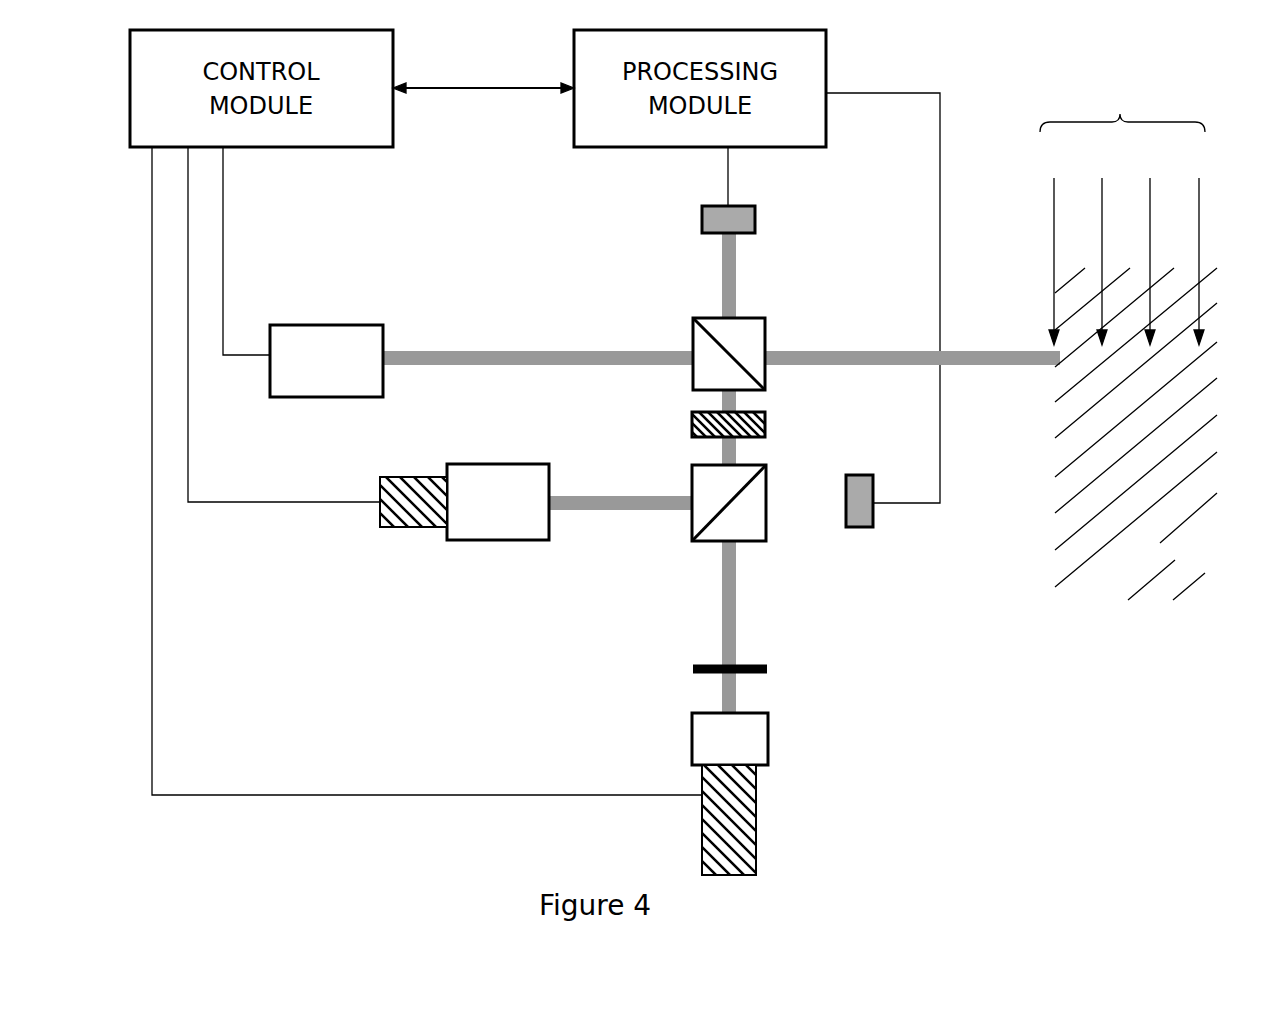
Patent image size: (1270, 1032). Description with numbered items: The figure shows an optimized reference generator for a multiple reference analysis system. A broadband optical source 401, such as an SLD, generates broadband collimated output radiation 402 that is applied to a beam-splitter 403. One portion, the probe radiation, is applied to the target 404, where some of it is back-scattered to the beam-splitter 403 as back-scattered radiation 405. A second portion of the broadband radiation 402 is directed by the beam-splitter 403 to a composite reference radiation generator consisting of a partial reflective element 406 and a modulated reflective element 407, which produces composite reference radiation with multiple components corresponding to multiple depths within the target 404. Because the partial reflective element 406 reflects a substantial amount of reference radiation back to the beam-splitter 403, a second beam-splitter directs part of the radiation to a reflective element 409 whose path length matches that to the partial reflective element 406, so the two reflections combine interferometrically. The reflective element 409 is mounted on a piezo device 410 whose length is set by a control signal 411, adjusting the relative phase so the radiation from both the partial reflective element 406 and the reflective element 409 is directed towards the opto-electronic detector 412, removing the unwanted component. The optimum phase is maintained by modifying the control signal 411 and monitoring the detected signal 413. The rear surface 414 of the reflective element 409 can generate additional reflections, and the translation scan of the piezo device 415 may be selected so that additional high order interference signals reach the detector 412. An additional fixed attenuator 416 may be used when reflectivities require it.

The broadband optical source 401 is at (392, 382).
The broadband collimated output radiation 402 is at (535, 340).
The beam-splitter 403 is at (708, 318).
The target 404 is at (1135, 603).
The back-scattered radiation 405 is at (872, 345).
The partial reflective element 406 is at (775, 664).
The modulated reflective element 407 is at (775, 722).
The reflective element 409 is at (560, 527).
The piezo device 410 is at (413, 540).
The control signal 411 is at (248, 507).
The opto-electronic detector 412 is at (880, 528).
The detected signal 413 is at (947, 458).
The rear surface 414 is at (455, 518).
The piezo device 415 is at (760, 815).
The fixed attenuator 416 is at (770, 418).